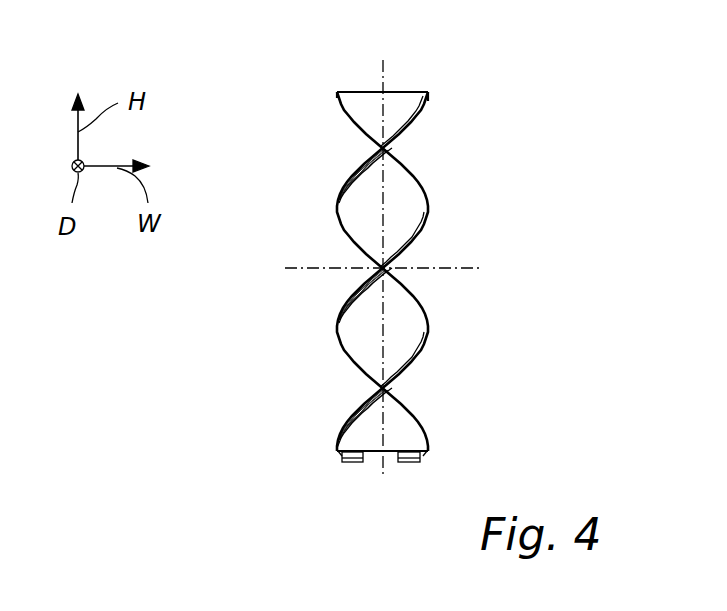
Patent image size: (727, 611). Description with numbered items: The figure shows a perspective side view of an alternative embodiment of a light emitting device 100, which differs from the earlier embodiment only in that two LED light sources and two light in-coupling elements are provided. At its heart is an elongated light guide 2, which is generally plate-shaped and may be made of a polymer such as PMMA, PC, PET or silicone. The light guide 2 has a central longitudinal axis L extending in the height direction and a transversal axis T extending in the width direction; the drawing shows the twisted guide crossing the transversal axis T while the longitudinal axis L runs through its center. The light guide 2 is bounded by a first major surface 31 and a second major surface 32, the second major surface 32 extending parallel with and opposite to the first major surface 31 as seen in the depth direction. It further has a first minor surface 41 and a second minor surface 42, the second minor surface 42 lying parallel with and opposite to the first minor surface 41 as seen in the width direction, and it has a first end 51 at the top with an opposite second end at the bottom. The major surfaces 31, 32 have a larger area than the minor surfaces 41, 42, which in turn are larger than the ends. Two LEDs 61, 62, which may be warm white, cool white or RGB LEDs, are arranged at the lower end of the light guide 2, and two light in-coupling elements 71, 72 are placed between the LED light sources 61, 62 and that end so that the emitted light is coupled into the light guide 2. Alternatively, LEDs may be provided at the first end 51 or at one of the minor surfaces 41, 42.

The elongated light guide 2 is at (457, 209).
The first major surface 31 is at (385, 117).
The second major surface 32 is at (403, 148).
The first minor surface 41 is at (410, 130).
The second minor surface 42 is at (337, 92).
The first end 51 is at (388, 91).
The LED light source 61 is at (355, 463).
The LED light source 62 is at (403, 464).
The light in-coupling element 71 is at (340, 452).
The light in-coupling element 72 is at (420, 453).
The light emitting device 100 is at (222, 302).
The transversal axis T is at (310, 268).
The central longitudinal axis L is at (385, 347).